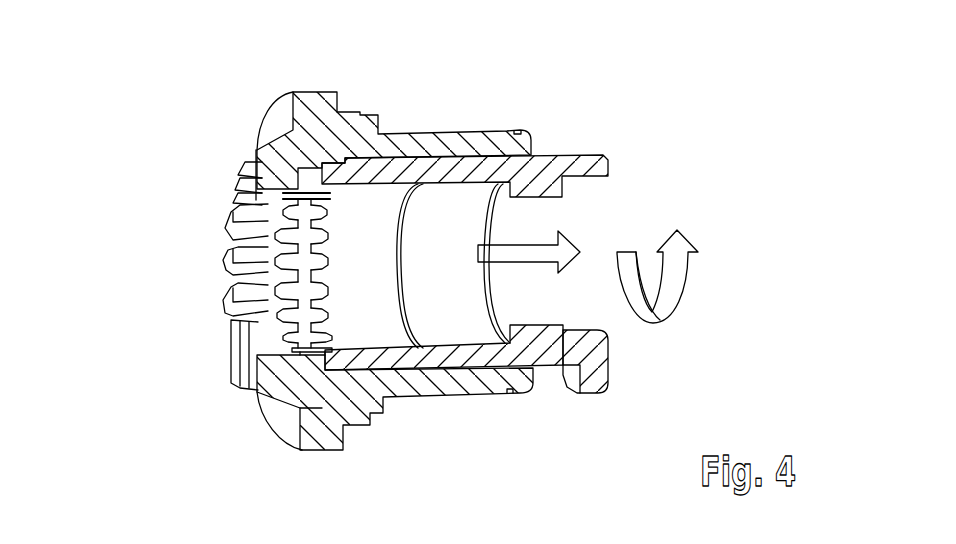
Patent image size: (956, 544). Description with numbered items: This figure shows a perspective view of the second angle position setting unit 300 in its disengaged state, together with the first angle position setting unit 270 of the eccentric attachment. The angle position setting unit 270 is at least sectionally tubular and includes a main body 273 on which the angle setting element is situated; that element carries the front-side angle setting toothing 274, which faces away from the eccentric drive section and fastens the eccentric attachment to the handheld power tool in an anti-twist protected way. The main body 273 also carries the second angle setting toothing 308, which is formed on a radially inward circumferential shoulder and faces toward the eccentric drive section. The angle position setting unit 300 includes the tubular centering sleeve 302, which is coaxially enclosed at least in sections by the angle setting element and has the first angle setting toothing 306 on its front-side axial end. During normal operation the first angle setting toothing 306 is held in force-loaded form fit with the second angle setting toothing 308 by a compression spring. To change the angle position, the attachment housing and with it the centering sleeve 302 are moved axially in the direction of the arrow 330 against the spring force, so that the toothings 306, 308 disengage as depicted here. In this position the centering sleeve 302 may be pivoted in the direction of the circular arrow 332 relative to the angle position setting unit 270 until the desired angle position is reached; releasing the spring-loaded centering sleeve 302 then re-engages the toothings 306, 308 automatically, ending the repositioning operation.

The angle position setting unit 300 is at (600, 113).
The centering sleeve 302 is at (468, 168).
The angle position setting unit 270 is at (205, 214).
The angle setting toothing 274 is at (237, 268).
The second angle setting toothing 308 is at (243, 290).
The first angle setting toothing 306 is at (237, 317).
The main body 273 is at (327, 410).
The arrow 330 is at (550, 197).
The circular arrow 332 is at (678, 287).